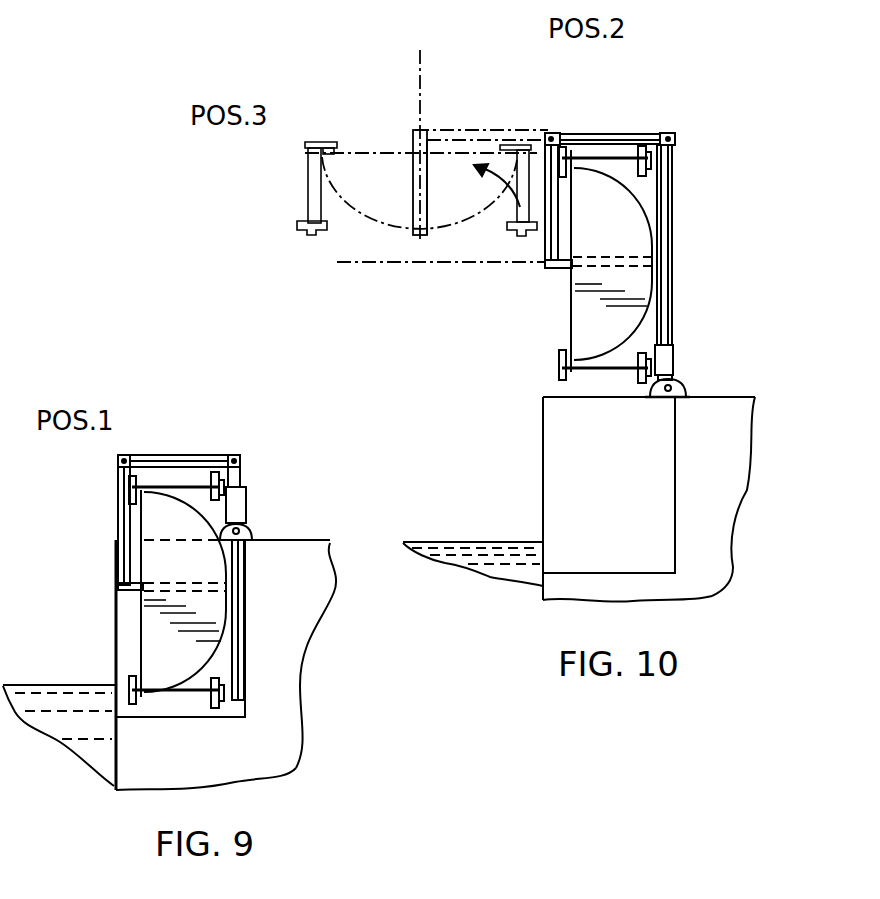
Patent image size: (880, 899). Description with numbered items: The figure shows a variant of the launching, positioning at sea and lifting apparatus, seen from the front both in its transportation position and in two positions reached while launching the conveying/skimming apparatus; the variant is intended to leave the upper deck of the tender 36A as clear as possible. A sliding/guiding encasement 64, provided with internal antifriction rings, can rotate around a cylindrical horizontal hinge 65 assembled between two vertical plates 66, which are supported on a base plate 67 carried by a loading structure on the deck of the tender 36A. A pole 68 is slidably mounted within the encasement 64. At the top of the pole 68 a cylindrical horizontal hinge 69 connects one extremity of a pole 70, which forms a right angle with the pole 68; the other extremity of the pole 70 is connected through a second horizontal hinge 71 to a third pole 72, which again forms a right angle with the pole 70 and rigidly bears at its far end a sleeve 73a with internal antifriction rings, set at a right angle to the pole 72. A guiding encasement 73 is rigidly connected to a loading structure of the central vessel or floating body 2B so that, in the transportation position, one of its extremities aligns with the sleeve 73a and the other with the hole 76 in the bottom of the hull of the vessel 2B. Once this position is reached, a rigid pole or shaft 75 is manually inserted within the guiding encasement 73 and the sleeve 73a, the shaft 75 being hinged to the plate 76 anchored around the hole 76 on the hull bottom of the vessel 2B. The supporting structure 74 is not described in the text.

The central vessel or floating body 2B is at (570, 312).
The tender 36A is at (543, 467).
The sliding/guiding encasement 64 is at (677, 345).
The cylindrical horizontal hinge 65 is at (670, 372).
The vertical plates 66 is at (682, 391).
The base plate 67 is at (655, 395).
The pole 68 is at (672, 280).
The cylindrical horizontal hinge 69 is at (672, 135).
The pole 70 is at (597, 133).
The second horizontal hinge 71 is at (548, 133).
The third pole 72 is at (545, 244).
The guiding encasement 73 is at (600, 258).
The sleeve 73a is at (410, 143).
The support structure 74 is at (650, 542).
The rigid pole or shaft 75 is at (399, 263).
The hole / plate 76 is at (673, 260).